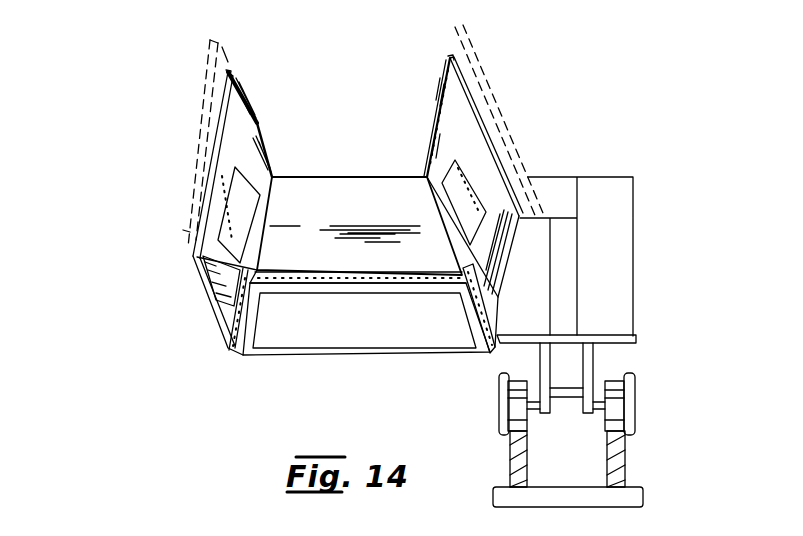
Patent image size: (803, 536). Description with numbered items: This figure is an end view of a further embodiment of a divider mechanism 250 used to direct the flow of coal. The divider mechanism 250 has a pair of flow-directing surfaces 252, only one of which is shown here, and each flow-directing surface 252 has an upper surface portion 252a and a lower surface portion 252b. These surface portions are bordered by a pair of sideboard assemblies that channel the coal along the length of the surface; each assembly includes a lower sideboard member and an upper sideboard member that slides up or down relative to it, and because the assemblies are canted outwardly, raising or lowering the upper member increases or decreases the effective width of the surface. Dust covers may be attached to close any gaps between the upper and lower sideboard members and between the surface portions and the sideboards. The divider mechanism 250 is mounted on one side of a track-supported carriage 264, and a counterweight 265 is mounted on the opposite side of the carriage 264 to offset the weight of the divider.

The divider mechanism 250 is at (152, 113).
The flow-directing surface 252 is at (322, 178).
The upper surface portion 252a is at (336, 177).
The lower surface portion 252b is at (380, 333).
The carriage 264 is at (637, 338).
The counterweight 265 is at (636, 213).